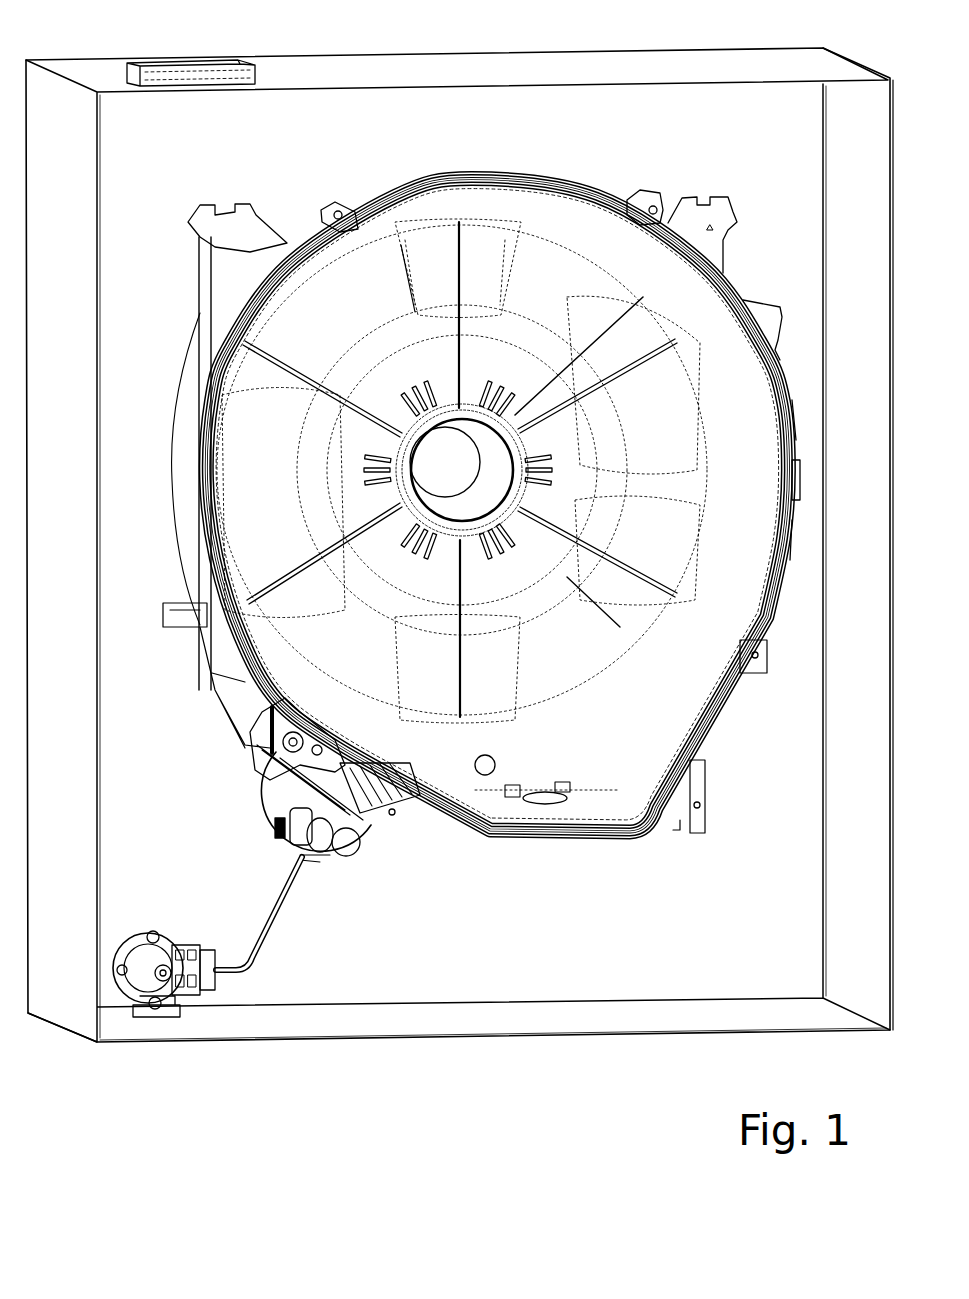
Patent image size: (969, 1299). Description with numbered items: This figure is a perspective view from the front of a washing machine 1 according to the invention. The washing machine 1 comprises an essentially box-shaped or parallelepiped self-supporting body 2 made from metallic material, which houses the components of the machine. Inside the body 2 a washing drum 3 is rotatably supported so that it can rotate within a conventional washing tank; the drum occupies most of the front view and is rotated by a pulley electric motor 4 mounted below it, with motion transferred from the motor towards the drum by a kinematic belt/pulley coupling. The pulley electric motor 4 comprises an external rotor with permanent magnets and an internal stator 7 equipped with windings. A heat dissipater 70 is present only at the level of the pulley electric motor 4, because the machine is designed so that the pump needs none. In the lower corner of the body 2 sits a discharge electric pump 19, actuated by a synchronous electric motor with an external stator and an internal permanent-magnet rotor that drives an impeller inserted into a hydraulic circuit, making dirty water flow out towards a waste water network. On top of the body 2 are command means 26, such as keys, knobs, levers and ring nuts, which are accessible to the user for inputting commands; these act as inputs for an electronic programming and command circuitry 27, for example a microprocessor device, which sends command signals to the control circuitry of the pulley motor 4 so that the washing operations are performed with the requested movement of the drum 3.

The washing machine 1 is at (556, 1052).
The self-supporting body 2 is at (110, 1042).
The washing drum 3 is at (462, 479).
The pulley electric motor 4 is at (354, 878).
The internal stator 7 is at (262, 838).
The discharge electric pump 19 is at (157, 912).
The command means 26 is at (178, 82).
The electronic programming and command circuitry 27 is at (191, 73).
The heat dissipater 70 is at (400, 820).